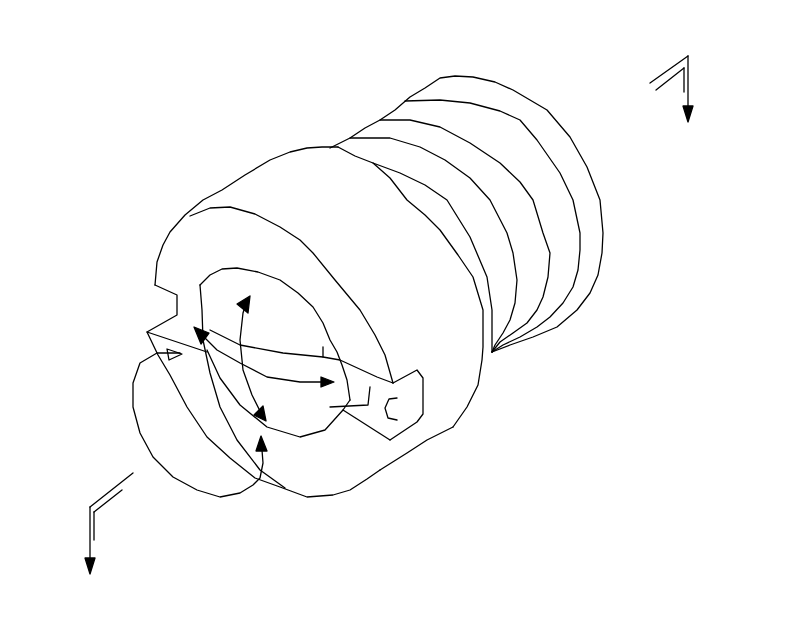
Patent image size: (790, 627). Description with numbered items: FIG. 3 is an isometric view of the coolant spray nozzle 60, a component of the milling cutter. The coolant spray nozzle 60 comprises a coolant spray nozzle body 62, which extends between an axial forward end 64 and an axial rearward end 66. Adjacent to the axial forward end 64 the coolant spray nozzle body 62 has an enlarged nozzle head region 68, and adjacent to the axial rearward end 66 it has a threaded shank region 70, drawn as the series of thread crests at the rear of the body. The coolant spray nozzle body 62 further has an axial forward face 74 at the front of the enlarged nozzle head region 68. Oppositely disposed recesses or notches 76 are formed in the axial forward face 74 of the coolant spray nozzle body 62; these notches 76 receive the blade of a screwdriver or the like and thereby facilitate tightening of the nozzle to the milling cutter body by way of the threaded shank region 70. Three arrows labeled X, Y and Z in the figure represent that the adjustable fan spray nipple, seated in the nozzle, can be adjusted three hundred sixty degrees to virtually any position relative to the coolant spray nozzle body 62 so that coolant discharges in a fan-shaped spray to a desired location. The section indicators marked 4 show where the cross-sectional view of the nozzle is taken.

The coolant spray nozzle 60 is at (148, 98).
The coolant spray nozzle body 62 is at (497, 350).
The axial forward end 64 is at (280, 477).
The axial rearward end 66 is at (577, 140).
The enlarged nozzle head region 68 is at (405, 457).
The threaded shank region 70 is at (417, 87).
The axial forward face 74 is at (315, 351).
The notches 76 is at (173, 296).
The section line 4- 4 is at (388, 334).